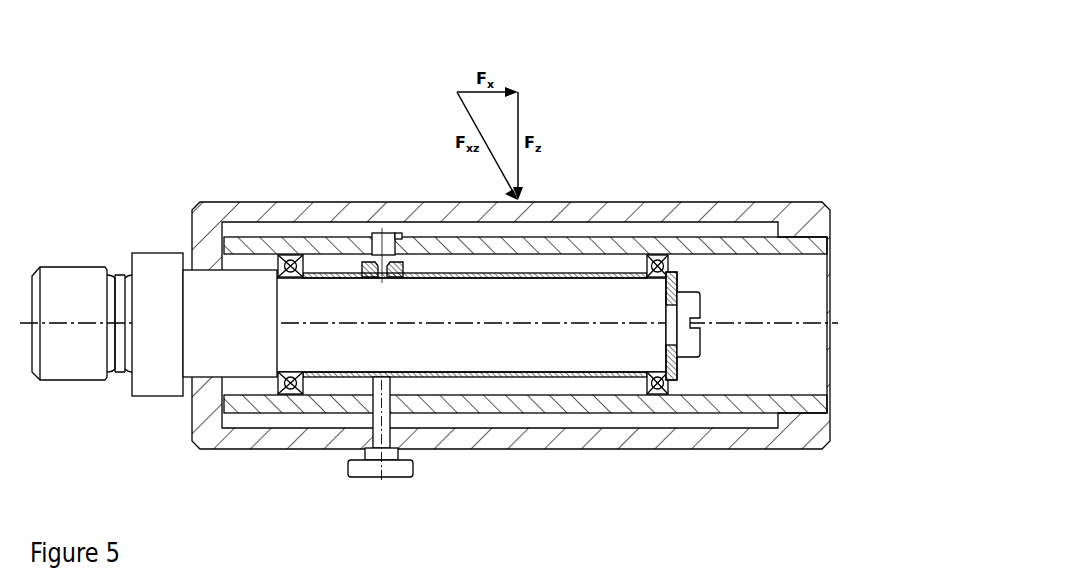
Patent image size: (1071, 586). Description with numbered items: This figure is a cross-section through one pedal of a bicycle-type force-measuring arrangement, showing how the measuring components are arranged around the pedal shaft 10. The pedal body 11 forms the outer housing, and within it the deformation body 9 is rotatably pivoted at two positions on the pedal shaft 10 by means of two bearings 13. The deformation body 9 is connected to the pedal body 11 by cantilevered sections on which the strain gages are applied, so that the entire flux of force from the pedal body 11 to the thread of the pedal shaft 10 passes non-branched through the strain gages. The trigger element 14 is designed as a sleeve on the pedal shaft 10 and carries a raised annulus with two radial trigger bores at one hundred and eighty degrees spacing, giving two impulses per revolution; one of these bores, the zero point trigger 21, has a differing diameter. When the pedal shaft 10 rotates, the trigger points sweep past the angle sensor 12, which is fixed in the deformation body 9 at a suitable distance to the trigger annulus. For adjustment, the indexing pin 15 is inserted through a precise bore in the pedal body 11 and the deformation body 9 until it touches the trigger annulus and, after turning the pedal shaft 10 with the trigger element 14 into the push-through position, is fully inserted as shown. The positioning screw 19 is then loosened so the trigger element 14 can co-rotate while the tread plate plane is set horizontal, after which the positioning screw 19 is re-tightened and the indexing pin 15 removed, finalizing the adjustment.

The deformation body 9 is at (243, 402).
The pedal shaft 10 is at (152, 268).
The pedal body 11 is at (812, 210).
The angle sensor 12 is at (388, 242).
The bearings 13 is at (288, 263).
The trigger element 14 is at (509, 372).
The indexing pin 15 is at (390, 467).
The positioning screw 19 is at (687, 342).
The zero point trigger 21 is at (382, 267).